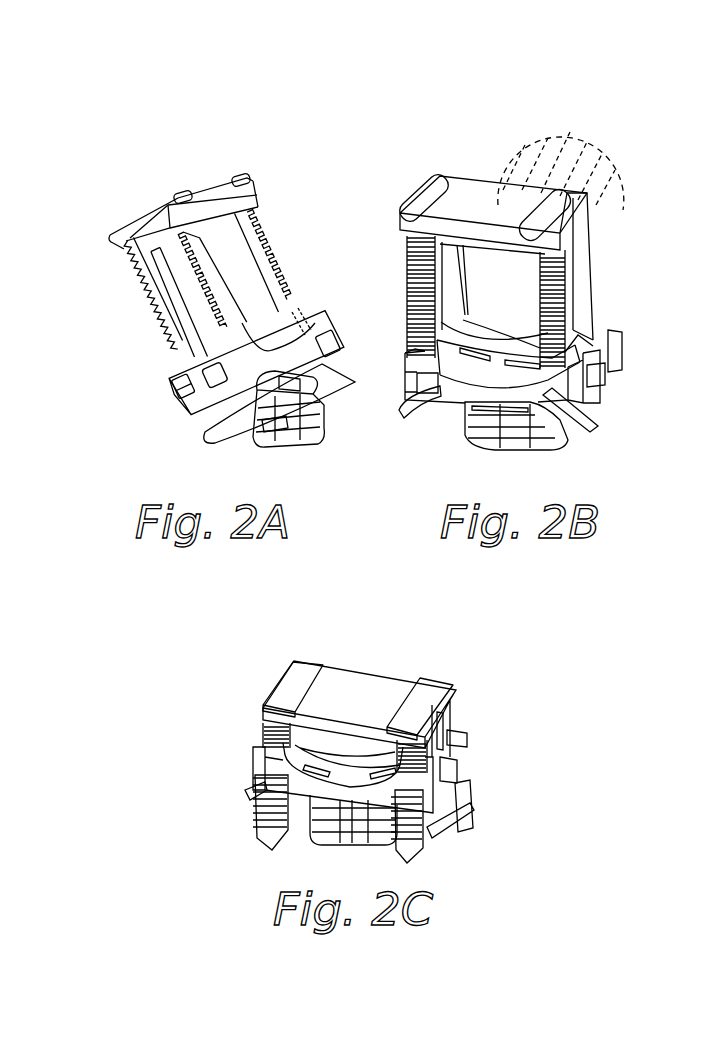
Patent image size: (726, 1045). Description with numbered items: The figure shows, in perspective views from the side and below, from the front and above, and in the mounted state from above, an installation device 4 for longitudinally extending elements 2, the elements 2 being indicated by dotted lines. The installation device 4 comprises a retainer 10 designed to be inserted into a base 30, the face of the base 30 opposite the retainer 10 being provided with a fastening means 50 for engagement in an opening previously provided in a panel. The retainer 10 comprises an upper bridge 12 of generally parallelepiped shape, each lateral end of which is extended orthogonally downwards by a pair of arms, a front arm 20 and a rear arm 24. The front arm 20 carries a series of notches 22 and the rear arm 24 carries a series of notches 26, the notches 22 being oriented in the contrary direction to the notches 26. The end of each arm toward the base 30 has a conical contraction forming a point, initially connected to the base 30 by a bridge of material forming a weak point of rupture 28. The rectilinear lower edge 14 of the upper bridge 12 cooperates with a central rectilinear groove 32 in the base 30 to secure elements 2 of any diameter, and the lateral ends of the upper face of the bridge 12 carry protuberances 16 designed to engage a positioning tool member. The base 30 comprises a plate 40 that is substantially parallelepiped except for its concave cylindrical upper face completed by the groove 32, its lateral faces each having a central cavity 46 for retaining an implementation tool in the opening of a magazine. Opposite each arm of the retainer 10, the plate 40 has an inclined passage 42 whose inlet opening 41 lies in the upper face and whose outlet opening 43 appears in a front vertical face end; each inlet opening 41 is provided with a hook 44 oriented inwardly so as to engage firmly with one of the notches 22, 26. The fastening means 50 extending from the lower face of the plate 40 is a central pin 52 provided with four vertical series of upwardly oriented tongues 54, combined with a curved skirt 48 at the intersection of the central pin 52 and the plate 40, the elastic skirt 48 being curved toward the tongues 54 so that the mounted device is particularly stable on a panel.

In FIG. 2B, the longitudinally extending elements 2 is at (540, 160).
In FIG. 2A, the installation device 4 is at (285, 223).
In FIG. 2B, the installation device 4 is at (372, 198).
In FIG. 2A, the retainer 10 is at (112, 255).
In FIG. 2B, the retainer 10 is at (630, 217).
In FIG. 2A, the upper bridge 12 is at (162, 225).
In FIG. 2B, the upper bridge 12 is at (485, 203).
In FIG. 2A, the rectilinear lower edge 14 is at (220, 220).
In FIG. 2B, the rectilinear lower edge 14 is at (494, 295).
In FIG. 2A, the protuberances 16 is at (110, 237).
In FIG. 2B, the protuberances 16 is at (427, 195).
In FIG. 2A, the front arm 20 is at (187, 273).
In FIG. 2B, the front arm 20 is at (571, 293).
In FIG. 2A, the notches 22 is at (213, 285).
In FIG. 2B, the notches 22 is at (553, 320).
In FIG. 2A, the rear arm 24 is at (170, 310).
In FIG. 2B, the rear arm 24 is at (576, 273).
In FIG. 2A, the notches 26 is at (160, 327).
In FIG. 2B, the notches 26 is at (594, 244).
In FIG. 2A, the weak point of rupture 28 is at (290, 328).
In FIG. 2B, the weak point of rupture 28 is at (583, 343).
In FIG. 2A, the base 30 is at (173, 422).
In FIG. 2B, the base 30 is at (633, 360).
In FIG. 2B, the central rectilinear groove 32 is at (512, 365).
In FIG. 2A, the plate 40 is at (197, 402).
In FIG. 2B, the plate 40 is at (600, 377).
In FIG. 2A, the inlet opening 41 is at (186, 392).
In FIG. 2B, the inlet opening 41 is at (414, 349).
In FIG. 2A, the inclined passage 42 is at (325, 340).
In FIG. 2B, the inclined passage 42 is at (428, 383).
In FIG. 2B, the outlet opening 43 is at (410, 368).
In FIG. 2A, the hook 44 is at (188, 388).
In FIG. 2B, the hook 44 is at (616, 345).
In FIG. 2A, the central cavity 46 is at (215, 378).
In FIG. 2B, the central cavity 46 is at (605, 384).
In FIG. 2A, the curved skirt 48 is at (230, 413).
In FIG. 2B, the curved skirt 48 is at (604, 418).
In FIG. 2A, the fastening means 50 is at (327, 443).
In FIG. 2B, the fastening means 50 is at (460, 438).
In FIG. 2A, the central pin 52 is at (290, 437).
In FIG. 2B, the central pin 52 is at (527, 441).
In FIG. 2A, the tongues 54 is at (273, 427).
In FIG. 2B, the tongues 54 is at (566, 447).